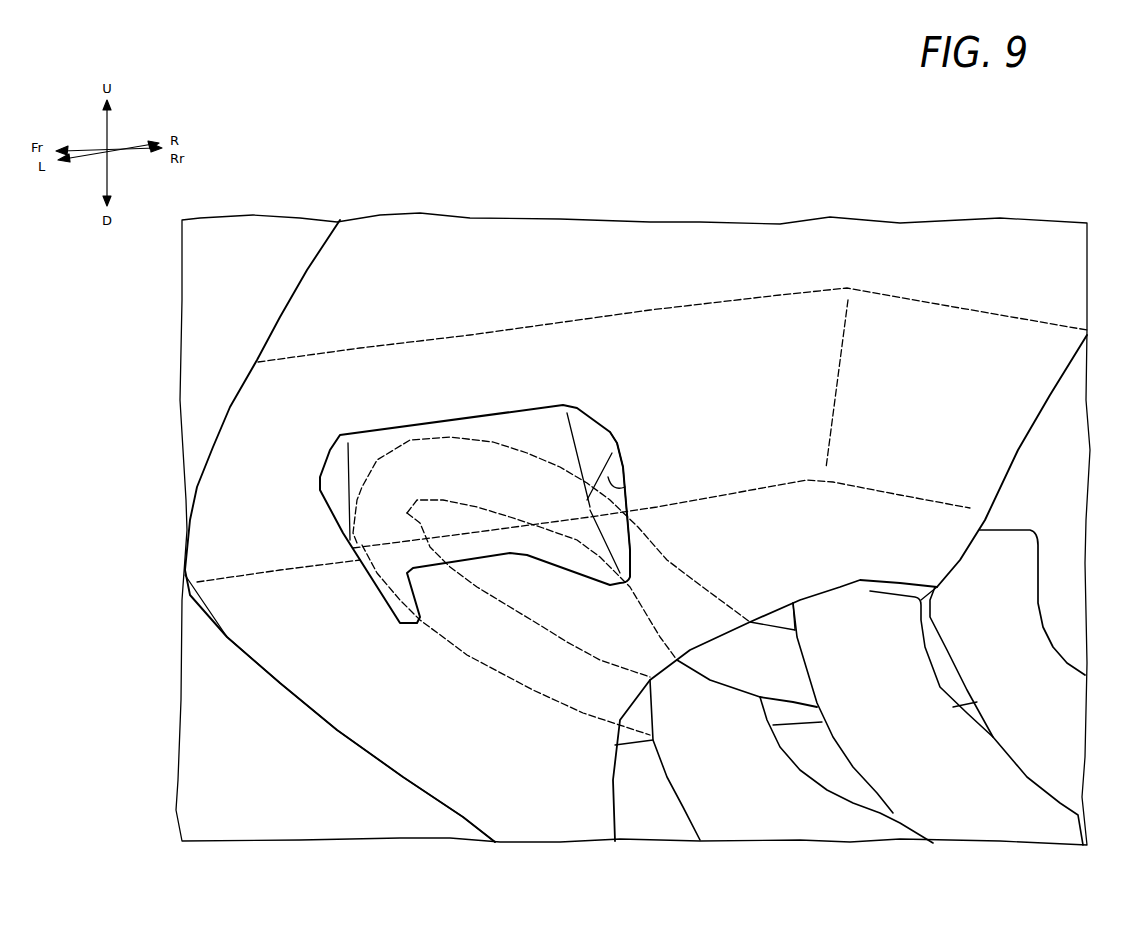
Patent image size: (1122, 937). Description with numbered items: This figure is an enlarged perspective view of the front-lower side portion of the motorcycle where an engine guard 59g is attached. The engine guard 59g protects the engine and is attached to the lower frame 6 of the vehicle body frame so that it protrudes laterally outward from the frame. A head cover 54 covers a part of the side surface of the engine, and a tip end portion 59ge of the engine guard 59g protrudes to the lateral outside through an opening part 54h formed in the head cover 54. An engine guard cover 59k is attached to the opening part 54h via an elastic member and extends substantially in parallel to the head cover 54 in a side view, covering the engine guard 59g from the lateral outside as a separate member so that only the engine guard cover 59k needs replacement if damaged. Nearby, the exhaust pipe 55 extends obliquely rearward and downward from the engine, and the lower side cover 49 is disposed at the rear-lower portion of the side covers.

The head cover 54 is at (283, 407).
The opening part 54h is at (620, 470).
The engine guard cover 59k is at (333, 490).
The tip end portion 59ge is at (475, 467).
The engine guard 59g is at (737, 650).
The exhaust pipe 55 is at (760, 797).
The lower frame 6 is at (952, 677).
The lower side cover 49 is at (473, 797).